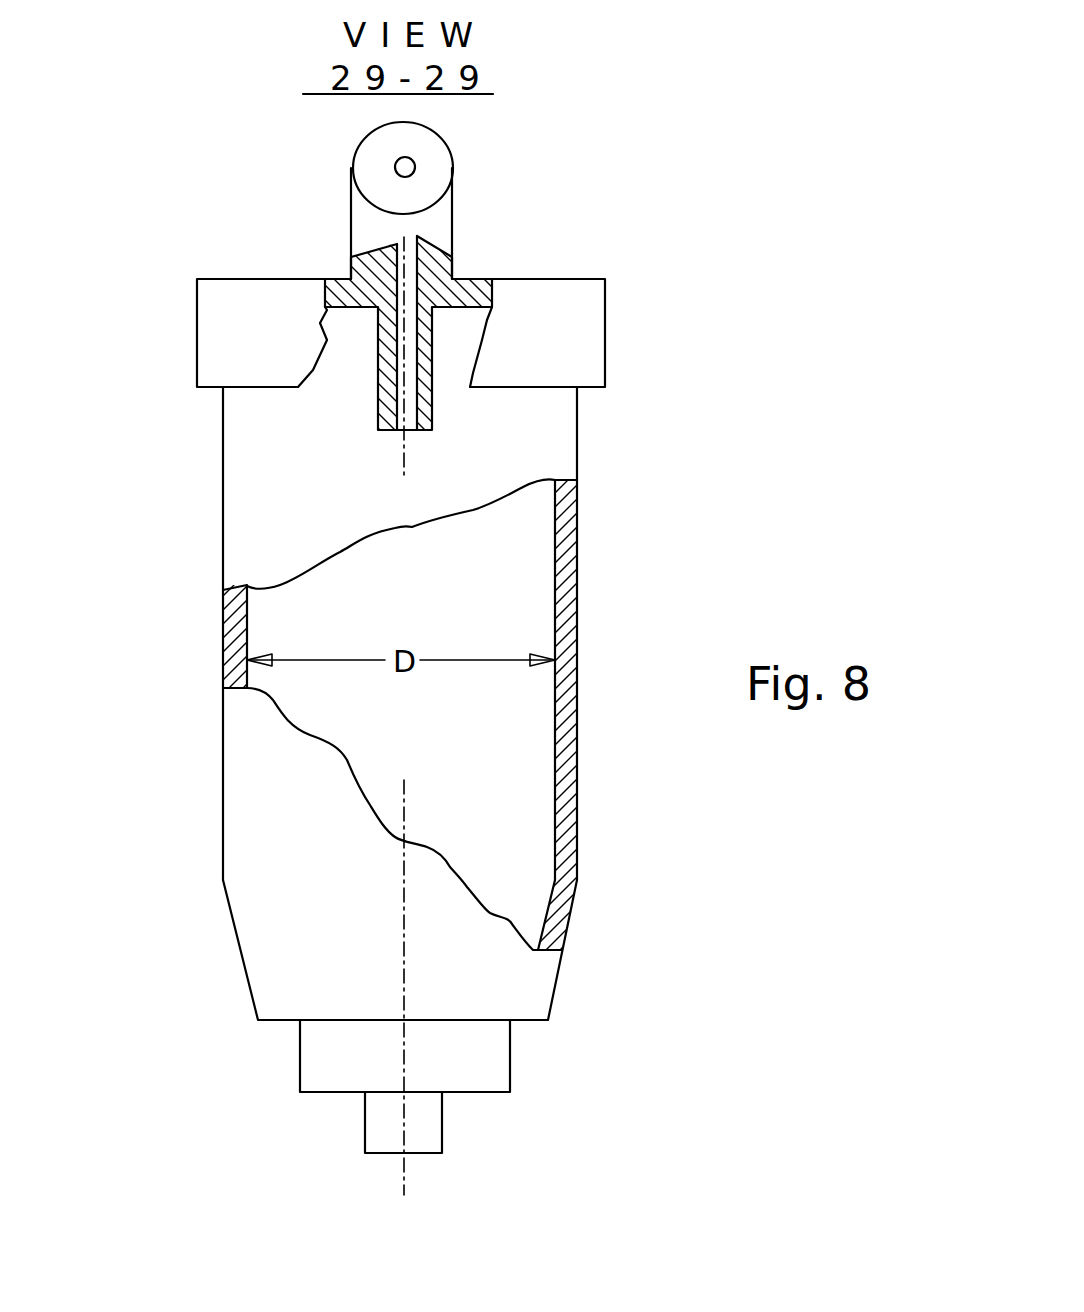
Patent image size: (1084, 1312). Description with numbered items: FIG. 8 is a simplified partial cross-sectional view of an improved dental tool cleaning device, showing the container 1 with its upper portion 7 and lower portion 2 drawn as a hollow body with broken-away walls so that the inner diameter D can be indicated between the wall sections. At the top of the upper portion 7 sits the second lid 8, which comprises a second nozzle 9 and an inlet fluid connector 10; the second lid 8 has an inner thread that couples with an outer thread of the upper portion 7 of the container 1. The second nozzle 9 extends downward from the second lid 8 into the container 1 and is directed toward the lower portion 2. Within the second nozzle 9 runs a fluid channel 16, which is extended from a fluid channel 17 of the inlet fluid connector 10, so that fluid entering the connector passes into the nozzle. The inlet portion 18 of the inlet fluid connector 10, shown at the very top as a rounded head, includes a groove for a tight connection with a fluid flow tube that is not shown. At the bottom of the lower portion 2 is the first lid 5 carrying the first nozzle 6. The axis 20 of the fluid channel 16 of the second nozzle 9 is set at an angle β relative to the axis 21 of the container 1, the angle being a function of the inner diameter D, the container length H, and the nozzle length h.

The container 1 is at (553, 450).
The lower portion 2 is at (605, 892).
The first lid 5 is at (493, 1067).
The first nozzle 6 is at (427, 1132).
The upper portion 7 is at (207, 408).
The second lid 8 is at (589, 318).
The second nozzle 9 is at (380, 398).
The inlet fluid connector 10 is at (437, 218).
The fluid channel 16 is at (410, 390).
The fluid channel 17 is at (398, 172).
The inlet portion 18 is at (430, 175).
The axis 20 is at (402, 457).
The axis 21 is at (405, 820).